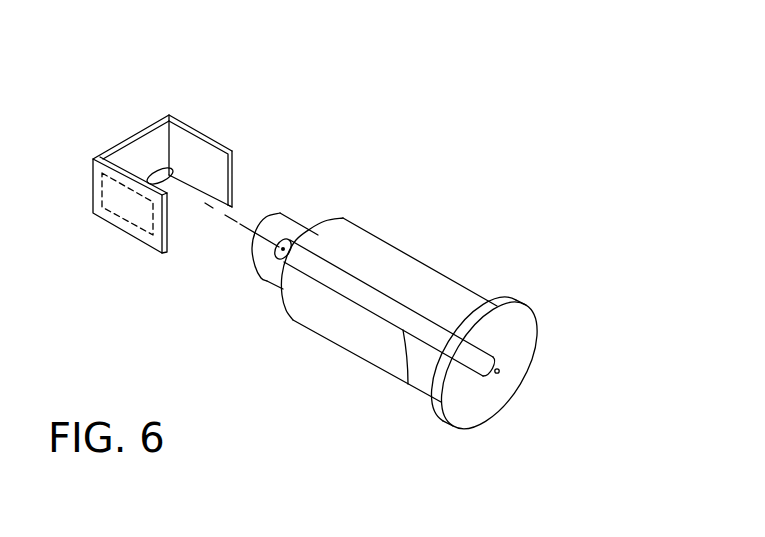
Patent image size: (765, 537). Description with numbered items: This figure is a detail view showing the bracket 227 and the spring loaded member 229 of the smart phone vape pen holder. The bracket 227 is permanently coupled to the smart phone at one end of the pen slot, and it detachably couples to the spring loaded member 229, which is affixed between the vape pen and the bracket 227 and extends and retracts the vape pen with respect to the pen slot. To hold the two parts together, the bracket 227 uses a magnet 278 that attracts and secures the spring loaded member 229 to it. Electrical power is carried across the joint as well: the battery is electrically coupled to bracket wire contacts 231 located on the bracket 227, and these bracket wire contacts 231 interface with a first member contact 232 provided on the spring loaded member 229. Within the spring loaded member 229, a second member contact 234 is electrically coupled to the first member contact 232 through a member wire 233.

The bracket 227 is at (208, 133).
The spring loaded member 229 is at (542, 307).
The bracket wire contacts 231 is at (148, 170).
The first member contact 232 is at (288, 240).
The member wire 233 is at (406, 381).
The second member contact 234 is at (500, 370).
The magnet 278 is at (122, 218).